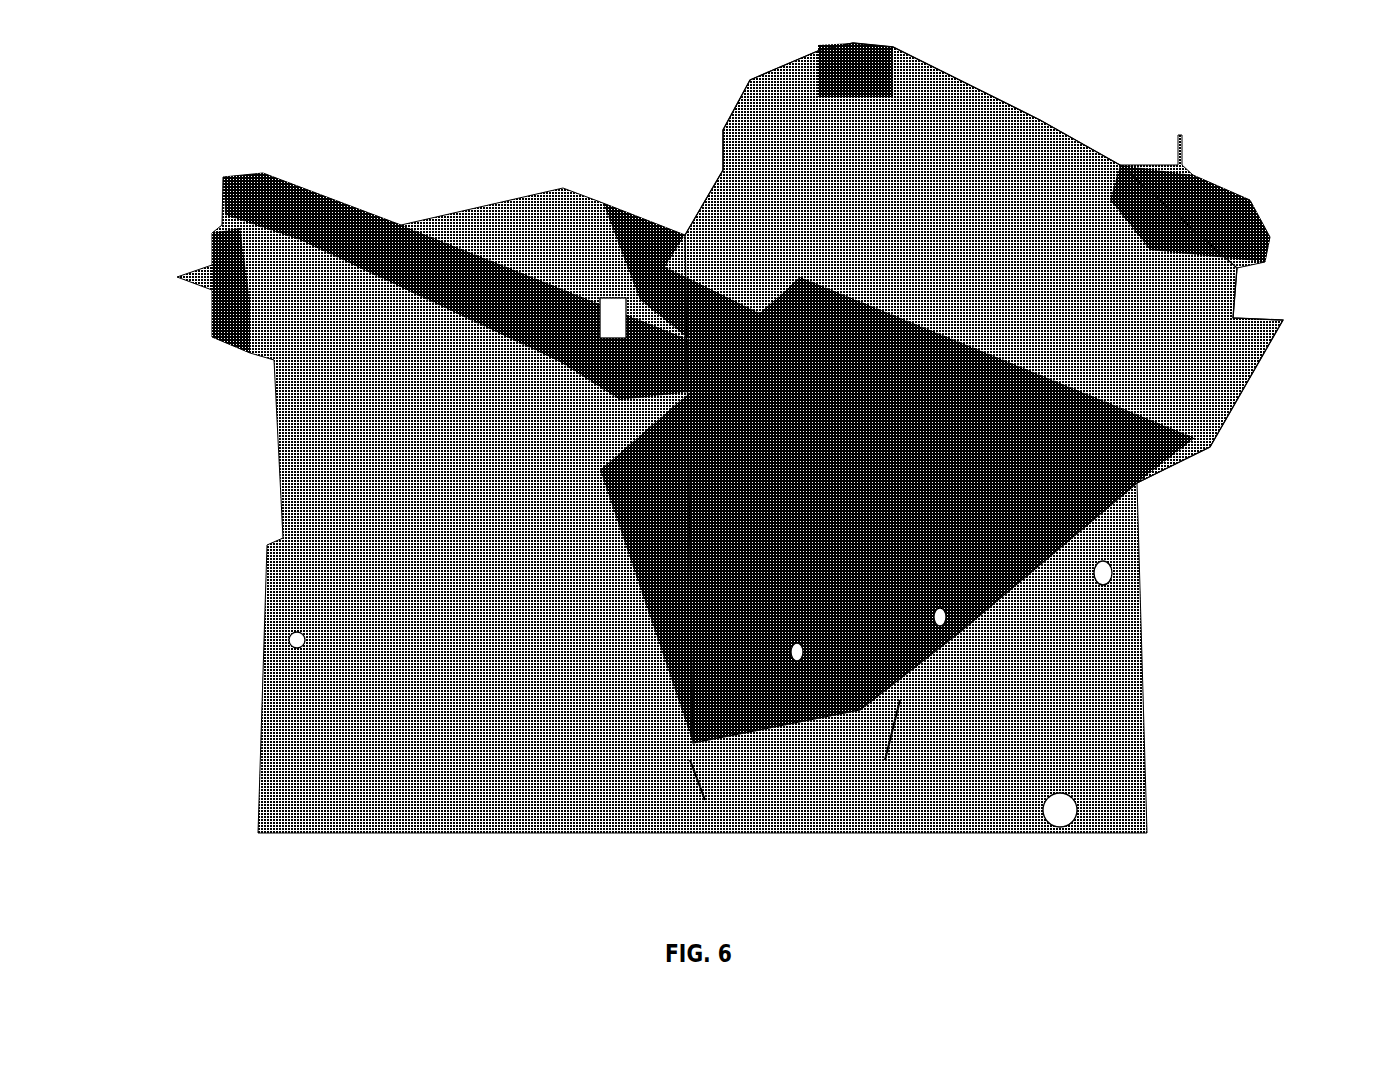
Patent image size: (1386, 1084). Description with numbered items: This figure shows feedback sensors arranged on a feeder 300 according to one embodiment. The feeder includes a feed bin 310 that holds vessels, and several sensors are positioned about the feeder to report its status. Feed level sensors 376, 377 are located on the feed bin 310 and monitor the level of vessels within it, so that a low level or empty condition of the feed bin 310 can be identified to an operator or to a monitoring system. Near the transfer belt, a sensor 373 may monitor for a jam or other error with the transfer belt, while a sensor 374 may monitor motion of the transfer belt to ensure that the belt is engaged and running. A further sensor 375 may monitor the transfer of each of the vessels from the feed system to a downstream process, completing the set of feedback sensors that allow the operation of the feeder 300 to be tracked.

The sorting apparatus 300 is at (296, 122).
The feed bin 310 is at (1060, 513).
The sensor 373 is at (609, 318).
The sensor 374 is at (236, 280).
The sensor 375 is at (620, 390).
The feed level sensor 376 is at (820, 664).
The feed level sensor 377 is at (708, 780).